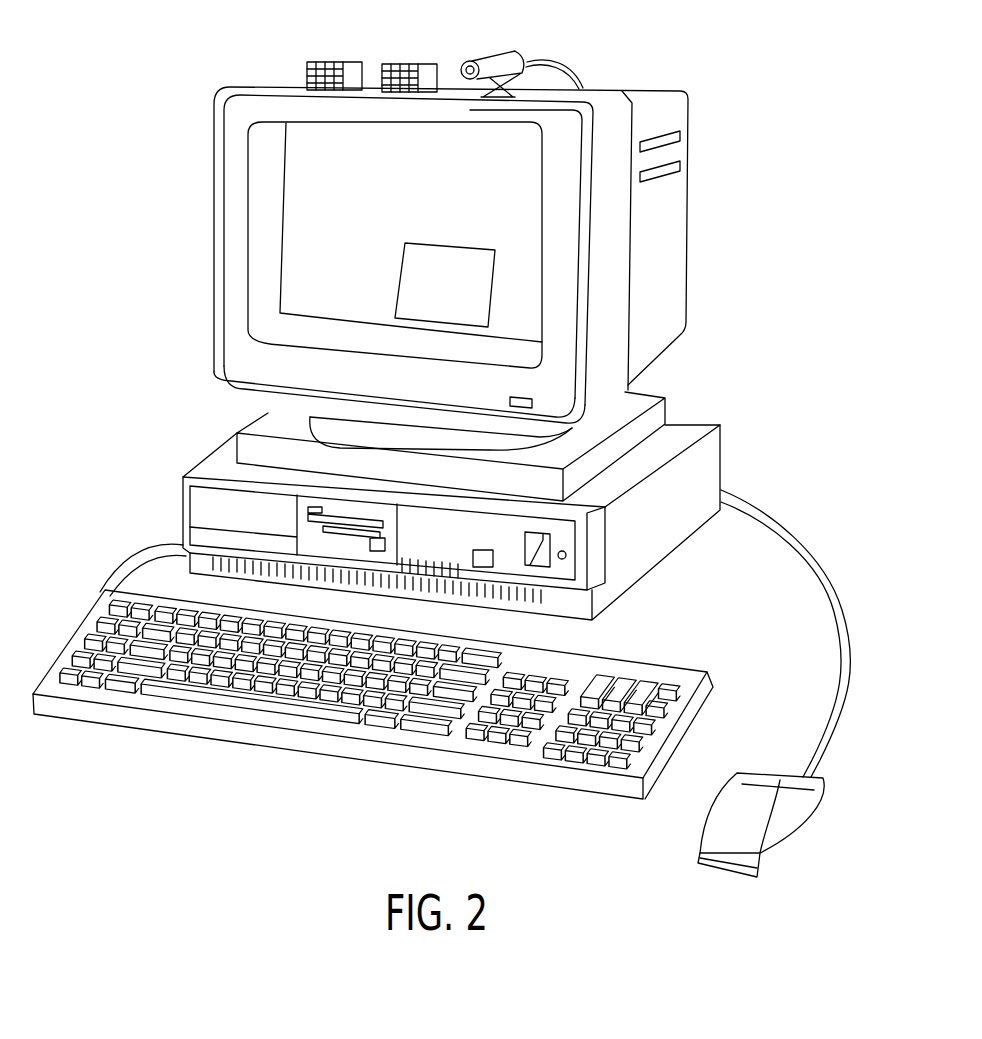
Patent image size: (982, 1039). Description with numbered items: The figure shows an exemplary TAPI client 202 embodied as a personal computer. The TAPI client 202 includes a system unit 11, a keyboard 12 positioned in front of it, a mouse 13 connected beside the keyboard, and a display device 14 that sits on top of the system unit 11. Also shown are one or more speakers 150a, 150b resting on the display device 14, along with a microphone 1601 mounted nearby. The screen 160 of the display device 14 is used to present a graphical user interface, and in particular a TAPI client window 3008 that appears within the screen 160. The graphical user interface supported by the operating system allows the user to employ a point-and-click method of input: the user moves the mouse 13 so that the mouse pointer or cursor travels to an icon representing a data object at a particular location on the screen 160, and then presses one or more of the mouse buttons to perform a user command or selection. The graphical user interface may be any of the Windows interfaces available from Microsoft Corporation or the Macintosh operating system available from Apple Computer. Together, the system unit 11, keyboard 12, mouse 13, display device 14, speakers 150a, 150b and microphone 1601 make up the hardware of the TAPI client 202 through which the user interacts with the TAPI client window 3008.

The display device 14 is at (213, 222).
The screen 160 is at (357, 260).
The TAPI client window 3008 is at (449, 242).
The speaker 150a is at (333, 61).
The speaker 150b is at (414, 63).
The microphone 1601 is at (519, 54).
The TAPI client 202 is at (144, 336).
The system unit 11 is at (181, 505).
The keyboard 12 is at (130, 723).
The mouse 13 is at (797, 838).